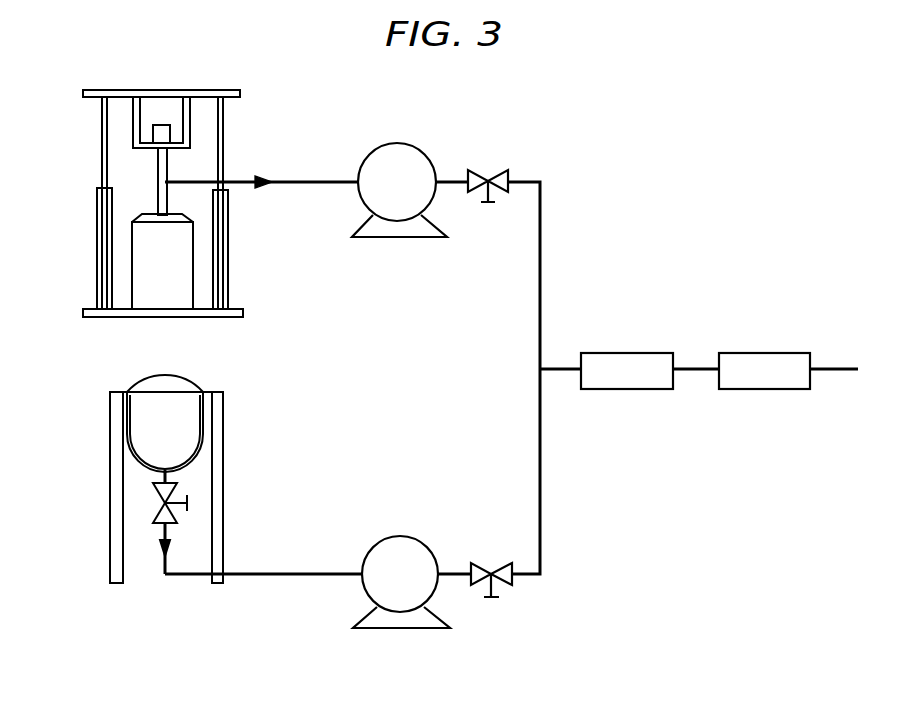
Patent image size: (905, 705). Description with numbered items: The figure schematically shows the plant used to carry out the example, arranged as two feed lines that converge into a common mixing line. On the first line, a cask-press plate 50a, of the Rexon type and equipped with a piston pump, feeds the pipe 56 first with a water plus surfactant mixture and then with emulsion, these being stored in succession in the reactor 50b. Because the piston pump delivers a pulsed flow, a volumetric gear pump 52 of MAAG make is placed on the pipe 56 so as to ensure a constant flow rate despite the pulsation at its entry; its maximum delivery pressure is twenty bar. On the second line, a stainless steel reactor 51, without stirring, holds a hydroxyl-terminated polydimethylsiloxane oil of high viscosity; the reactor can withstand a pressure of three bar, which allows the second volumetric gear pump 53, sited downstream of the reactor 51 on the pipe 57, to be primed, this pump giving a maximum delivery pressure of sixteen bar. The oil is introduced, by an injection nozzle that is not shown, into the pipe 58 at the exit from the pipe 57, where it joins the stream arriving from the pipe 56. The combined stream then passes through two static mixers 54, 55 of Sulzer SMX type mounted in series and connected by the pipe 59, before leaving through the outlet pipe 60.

The cask-press plate 50a is at (101, 171).
The reactor 50b is at (131, 262).
The stainless steel reactor 51 is at (112, 434).
The volumetric gear pump 52 is at (428, 157).
The second volumetric gear pump 53 is at (424, 545).
The static mixer 54 is at (618, 353).
The static mixer 55 is at (758, 353).
The pipe 56 is at (541, 250).
The pipe 57 is at (541, 488).
The pipe 58 is at (560, 366).
The pipe 59 is at (697, 372).
The outlet pipe 60 is at (831, 372).